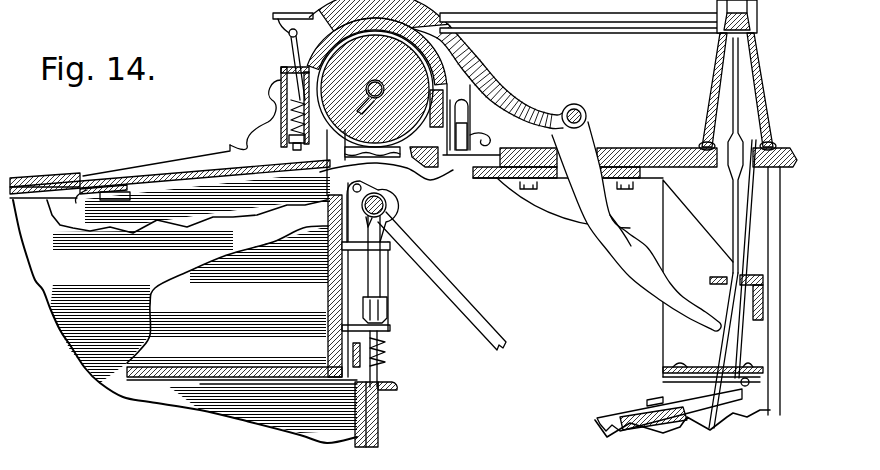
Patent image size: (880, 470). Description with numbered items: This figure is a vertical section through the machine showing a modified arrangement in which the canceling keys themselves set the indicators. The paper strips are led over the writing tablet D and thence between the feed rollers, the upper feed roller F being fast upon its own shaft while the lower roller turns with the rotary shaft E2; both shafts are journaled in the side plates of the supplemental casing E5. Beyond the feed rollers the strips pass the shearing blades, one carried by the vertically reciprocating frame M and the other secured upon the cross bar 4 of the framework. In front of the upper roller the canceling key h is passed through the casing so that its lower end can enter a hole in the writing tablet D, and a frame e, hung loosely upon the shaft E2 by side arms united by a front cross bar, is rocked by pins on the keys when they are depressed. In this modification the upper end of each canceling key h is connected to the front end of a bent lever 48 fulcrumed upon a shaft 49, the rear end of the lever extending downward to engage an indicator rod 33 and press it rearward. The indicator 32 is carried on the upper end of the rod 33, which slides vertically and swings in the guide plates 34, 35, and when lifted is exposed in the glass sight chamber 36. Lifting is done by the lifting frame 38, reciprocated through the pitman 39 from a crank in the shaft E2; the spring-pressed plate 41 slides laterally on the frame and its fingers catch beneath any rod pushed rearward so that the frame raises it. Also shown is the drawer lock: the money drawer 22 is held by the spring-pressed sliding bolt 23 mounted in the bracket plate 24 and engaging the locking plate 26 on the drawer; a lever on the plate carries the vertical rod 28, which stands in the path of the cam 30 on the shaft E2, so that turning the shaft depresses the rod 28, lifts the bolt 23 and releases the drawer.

The writing tablet D is at (187, 168).
The canceling key h is at (290, 50).
The frame e is at (283, 78).
The feed roller F is at (375, 89).
The supplemental casing E5 is at (437, 63).
The bent lever 48 is at (495, 103).
The shaft 49 is at (577, 104).
The vertically reciprocating frame M is at (432, 116).
The cross bar 4 is at (448, 174).
The cam 30 is at (388, 201).
The rotary shaft E2 is at (391, 210).
The indicator 32 is at (731, 113).
The glass sight chamber 36 is at (756, 100).
The vertical rod 28 is at (380, 293).
The bracket plate 24 is at (390, 330).
The sliding bolt 23 is at (382, 370).
The locking plate 26 is at (397, 390).
The money-drawer 22 is at (233, 303).
The pitman 39 is at (470, 308).
The guide plate 34 is at (715, 277).
The indicator rod 33 is at (730, 300).
The guide plate 35 is at (698, 367).
The lifting frame 38 is at (652, 425).
The spring-pressed plate 41 is at (628, 415).